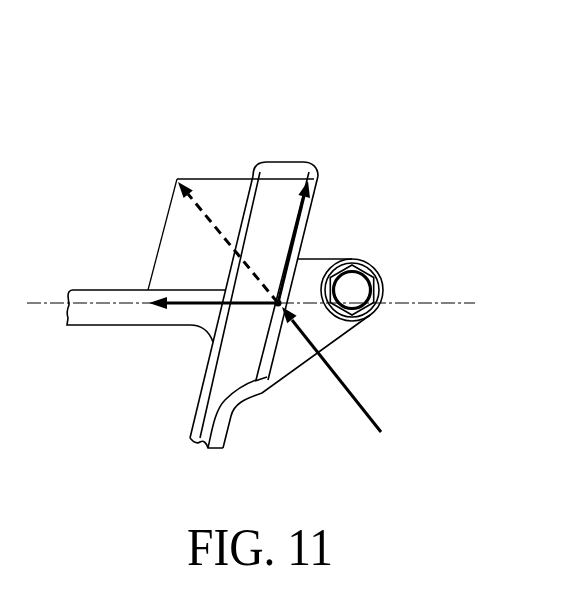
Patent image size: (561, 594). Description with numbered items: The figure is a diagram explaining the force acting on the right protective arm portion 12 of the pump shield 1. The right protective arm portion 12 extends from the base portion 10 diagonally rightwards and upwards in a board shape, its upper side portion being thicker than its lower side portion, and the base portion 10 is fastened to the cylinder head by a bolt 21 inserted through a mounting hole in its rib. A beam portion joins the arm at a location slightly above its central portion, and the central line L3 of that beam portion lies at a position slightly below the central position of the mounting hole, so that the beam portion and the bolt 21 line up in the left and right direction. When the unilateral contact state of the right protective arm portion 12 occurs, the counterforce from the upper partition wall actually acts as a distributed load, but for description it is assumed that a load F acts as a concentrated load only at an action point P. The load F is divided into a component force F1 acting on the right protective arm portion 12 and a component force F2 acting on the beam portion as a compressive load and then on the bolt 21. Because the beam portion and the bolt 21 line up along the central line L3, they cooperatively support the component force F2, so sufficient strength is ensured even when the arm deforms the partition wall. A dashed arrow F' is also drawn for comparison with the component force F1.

The pump shield 1 is at (451, 112).
The right protective arm portion 12 is at (278, 161).
The base portion 10 is at (335, 345).
The bolt 21 is at (372, 277).
The central line of the beam portion L3 is at (264, 304).
The action point P is at (265, 315).
The load F is at (341, 377).
The component force F1 is at (308, 218).
The component force F2 is at (184, 308).
The force F' is at (228, 210).